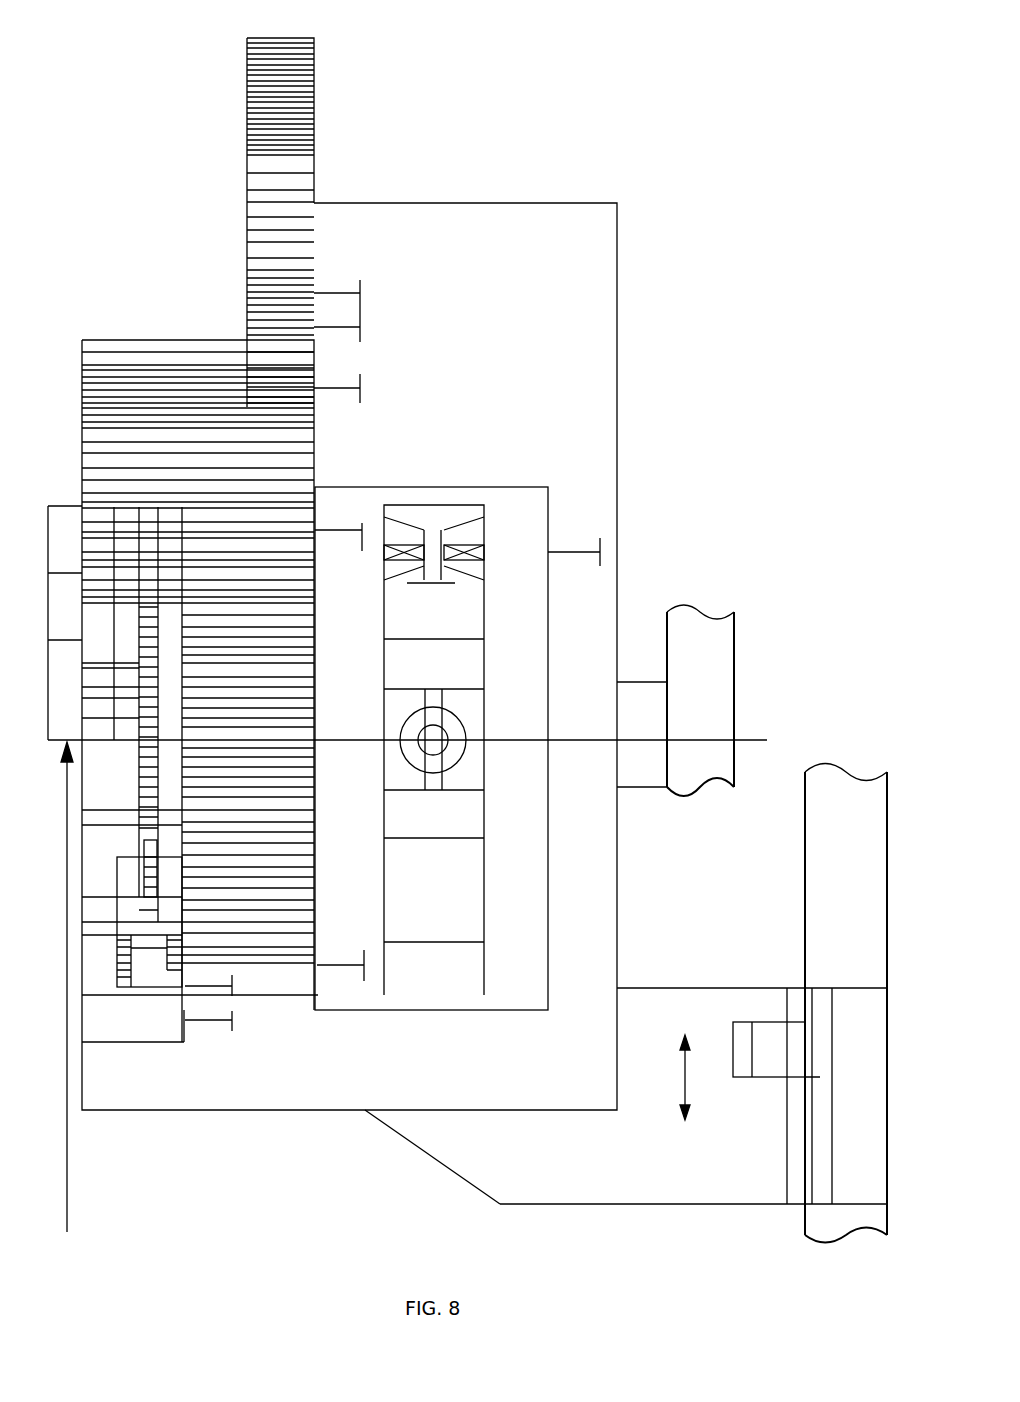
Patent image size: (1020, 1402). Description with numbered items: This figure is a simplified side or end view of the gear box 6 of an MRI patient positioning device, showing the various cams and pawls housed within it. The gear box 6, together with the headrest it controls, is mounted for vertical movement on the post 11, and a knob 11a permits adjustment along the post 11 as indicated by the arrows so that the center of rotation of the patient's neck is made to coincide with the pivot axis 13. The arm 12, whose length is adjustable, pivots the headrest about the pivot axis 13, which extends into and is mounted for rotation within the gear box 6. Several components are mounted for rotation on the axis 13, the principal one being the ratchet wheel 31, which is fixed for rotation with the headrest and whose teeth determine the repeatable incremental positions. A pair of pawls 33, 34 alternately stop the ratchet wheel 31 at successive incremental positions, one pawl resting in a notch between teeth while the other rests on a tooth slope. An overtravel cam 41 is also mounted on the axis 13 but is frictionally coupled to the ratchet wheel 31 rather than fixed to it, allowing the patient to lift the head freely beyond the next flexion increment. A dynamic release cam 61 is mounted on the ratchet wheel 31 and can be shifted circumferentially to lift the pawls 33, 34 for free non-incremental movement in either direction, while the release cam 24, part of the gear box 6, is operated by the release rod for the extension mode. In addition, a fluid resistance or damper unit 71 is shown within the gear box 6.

The gear box 6 is at (568, 207).
The post 11 is at (832, 838).
The knob 11a is at (733, 1050).
The arm 12 is at (710, 662).
The pivot axis 13 is at (72, 738).
The release cam 24 is at (280, 37).
The ratchet wheel 31 is at (270, 962).
The upper pawl 33 is at (183, 638).
The pawl 34 is at (197, 338).
The overtravel cam 41 is at (140, 775).
The dynamic release cam 61 is at (67, 1190).
The damper unit 71 is at (433, 942).